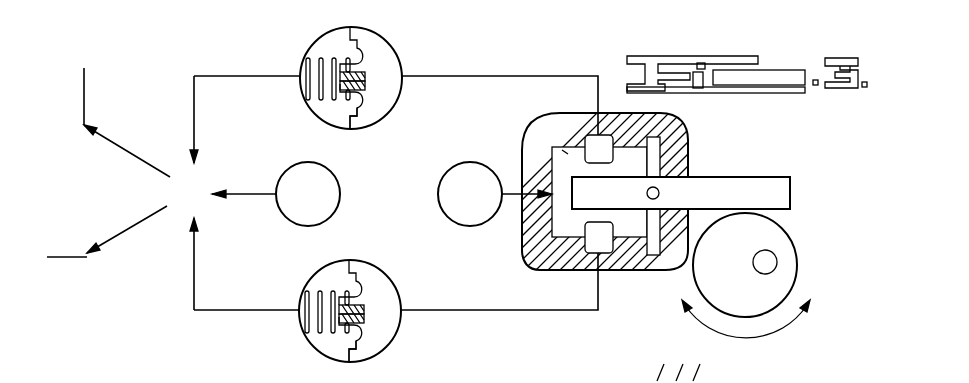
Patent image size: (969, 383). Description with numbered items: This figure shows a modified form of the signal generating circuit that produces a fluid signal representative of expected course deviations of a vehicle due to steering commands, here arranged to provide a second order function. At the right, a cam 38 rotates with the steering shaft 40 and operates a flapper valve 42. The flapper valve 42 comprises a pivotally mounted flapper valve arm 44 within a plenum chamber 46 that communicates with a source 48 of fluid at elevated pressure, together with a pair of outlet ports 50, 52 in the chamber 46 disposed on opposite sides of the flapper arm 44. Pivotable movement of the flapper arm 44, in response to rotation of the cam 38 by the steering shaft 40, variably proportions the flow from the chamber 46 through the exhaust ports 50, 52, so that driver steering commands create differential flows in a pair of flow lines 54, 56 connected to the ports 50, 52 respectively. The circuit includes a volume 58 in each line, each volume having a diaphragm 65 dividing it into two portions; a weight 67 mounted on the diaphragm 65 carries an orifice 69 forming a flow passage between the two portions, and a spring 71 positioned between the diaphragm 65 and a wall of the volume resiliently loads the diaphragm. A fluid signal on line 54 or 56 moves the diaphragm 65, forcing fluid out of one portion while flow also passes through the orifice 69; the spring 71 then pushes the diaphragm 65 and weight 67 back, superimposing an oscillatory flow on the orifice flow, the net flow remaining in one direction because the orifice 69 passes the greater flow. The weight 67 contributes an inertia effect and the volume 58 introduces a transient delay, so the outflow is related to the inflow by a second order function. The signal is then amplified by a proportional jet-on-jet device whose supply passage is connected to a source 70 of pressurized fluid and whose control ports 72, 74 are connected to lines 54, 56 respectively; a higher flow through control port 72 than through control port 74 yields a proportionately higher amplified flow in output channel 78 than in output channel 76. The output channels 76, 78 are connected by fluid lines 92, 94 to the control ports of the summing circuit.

The cam 38 is at (772, 235).
The steering shaft 40 is at (771, 262).
The flapper valve 42 is at (700, 143).
The flapper valve arm 44 is at (742, 182).
The plenum chamber 46 is at (552, 150).
The source of fluid at elevated pressure 48 is at (473, 142).
The outlet port 50 is at (704, 108).
The outlet port 52 is at (608, 224).
The flow line 54 is at (245, 40).
The flow line 56 is at (220, 320).
The volume 58 is at (395, 46).
The diaphragm 65 is at (367, 119).
The weight 67 is at (366, 88).
The orifice 69 is at (366, 80).
The source of pressurized fluid 70 is at (340, 190).
The spring 71 is at (320, 58).
The control port 72 is at (194, 106).
The control port 74 is at (194, 262).
The output channel 76 is at (120, 146).
The output channel 78 is at (135, 222).
The fluid line 92 is at (47, 257).
The fluid line 94 is at (84, 76).